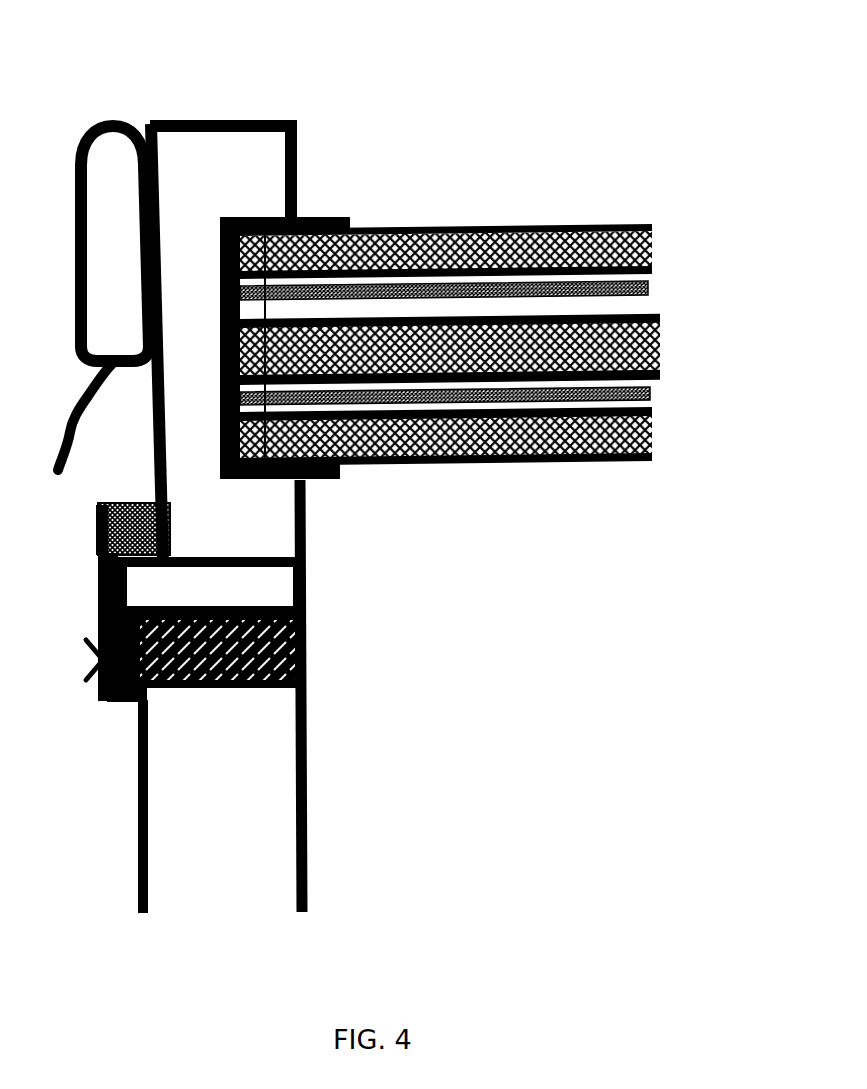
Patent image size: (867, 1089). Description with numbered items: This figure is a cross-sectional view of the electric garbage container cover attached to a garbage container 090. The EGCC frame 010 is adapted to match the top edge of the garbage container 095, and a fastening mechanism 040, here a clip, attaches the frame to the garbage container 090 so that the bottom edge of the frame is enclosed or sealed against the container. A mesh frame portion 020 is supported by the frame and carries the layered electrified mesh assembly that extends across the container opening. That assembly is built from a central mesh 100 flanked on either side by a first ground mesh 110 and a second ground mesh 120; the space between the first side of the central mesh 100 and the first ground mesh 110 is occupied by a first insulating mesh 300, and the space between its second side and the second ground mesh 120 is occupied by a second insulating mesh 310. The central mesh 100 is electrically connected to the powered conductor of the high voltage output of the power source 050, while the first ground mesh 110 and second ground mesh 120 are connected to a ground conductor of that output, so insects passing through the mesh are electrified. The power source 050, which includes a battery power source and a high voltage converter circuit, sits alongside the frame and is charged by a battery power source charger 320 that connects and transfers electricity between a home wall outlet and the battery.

The EGCC frame 010 is at (203, 166).
The mesh frame portion 020 is at (340, 477).
The fastening mechanism 040 is at (97, 533).
The power source 050 is at (106, 176).
The garbage container 090 is at (228, 807).
The top edge of a garbage container 095 is at (270, 590).
The central mesh 100 is at (654, 312).
The first ground mesh 110 is at (383, 228).
The second ground mesh 120 is at (610, 462).
The first insulating mesh 300 is at (480, 227).
The second insulating mesh 310 is at (503, 462).
The battery power source charger 320 is at (92, 384).